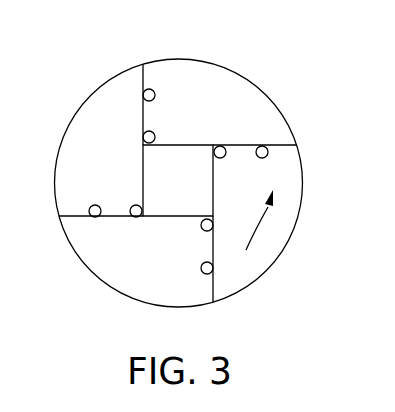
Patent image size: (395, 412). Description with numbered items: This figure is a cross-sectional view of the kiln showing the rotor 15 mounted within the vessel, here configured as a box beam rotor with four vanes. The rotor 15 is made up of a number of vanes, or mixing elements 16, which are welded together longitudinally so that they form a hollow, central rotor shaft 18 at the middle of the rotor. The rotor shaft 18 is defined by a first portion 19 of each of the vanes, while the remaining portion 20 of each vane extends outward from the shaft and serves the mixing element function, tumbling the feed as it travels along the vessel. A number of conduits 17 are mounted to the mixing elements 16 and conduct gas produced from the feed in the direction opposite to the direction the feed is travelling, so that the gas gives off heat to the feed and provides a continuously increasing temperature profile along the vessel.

The rotor 15 is at (312, 185).
The mixing elements 16 is at (218, 277).
The conduits 17 is at (93, 209).
The central rotor shaft 18 is at (197, 192).
The first portion 19 is at (204, 145).
The remaining portion 20 is at (143, 80).